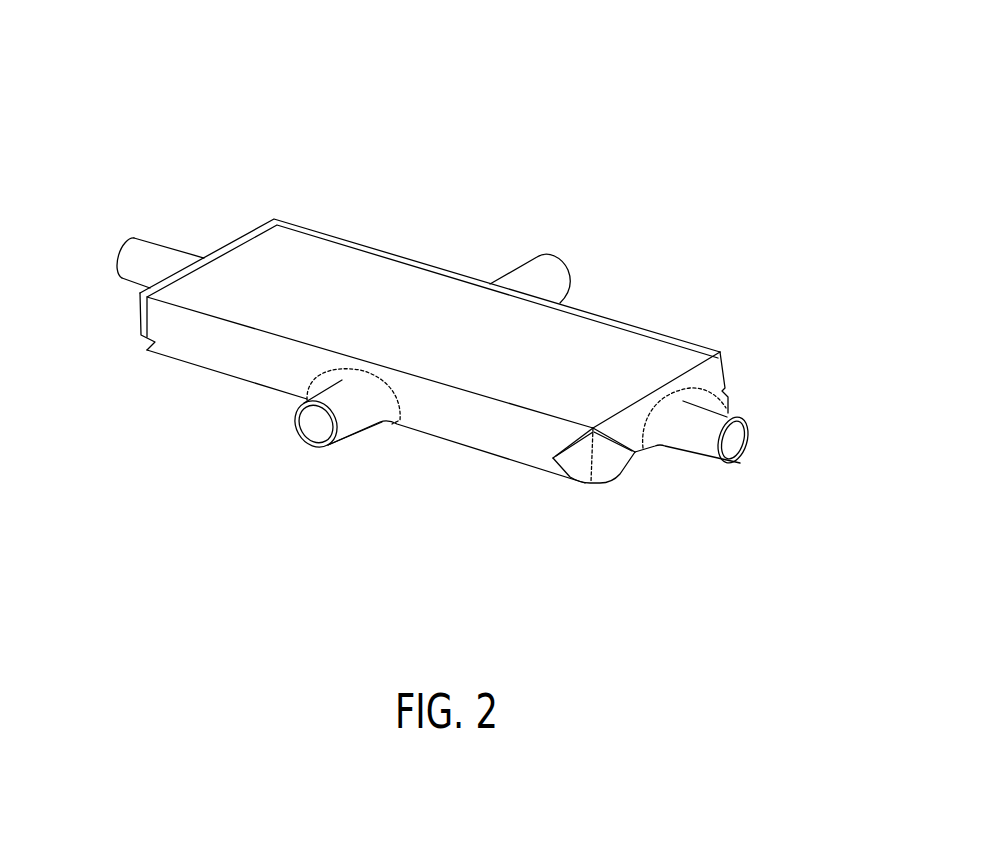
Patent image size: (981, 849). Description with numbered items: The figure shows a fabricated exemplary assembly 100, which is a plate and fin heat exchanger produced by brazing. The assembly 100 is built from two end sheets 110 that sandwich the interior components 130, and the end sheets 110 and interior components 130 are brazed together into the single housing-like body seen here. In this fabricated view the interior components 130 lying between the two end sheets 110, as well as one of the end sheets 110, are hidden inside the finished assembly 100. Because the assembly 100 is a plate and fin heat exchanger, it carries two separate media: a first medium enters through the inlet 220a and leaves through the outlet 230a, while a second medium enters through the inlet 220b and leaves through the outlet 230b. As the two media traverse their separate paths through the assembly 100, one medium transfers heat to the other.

The assembly 100 is at (572, 81).
The end sheets 110 is at (331, 251).
The interior components 130 is at (118, 302).
The inlet 220a is at (284, 452).
The inlet 220b is at (820, 470).
The outlet 230a is at (567, 261).
The outlet 230b is at (113, 249).